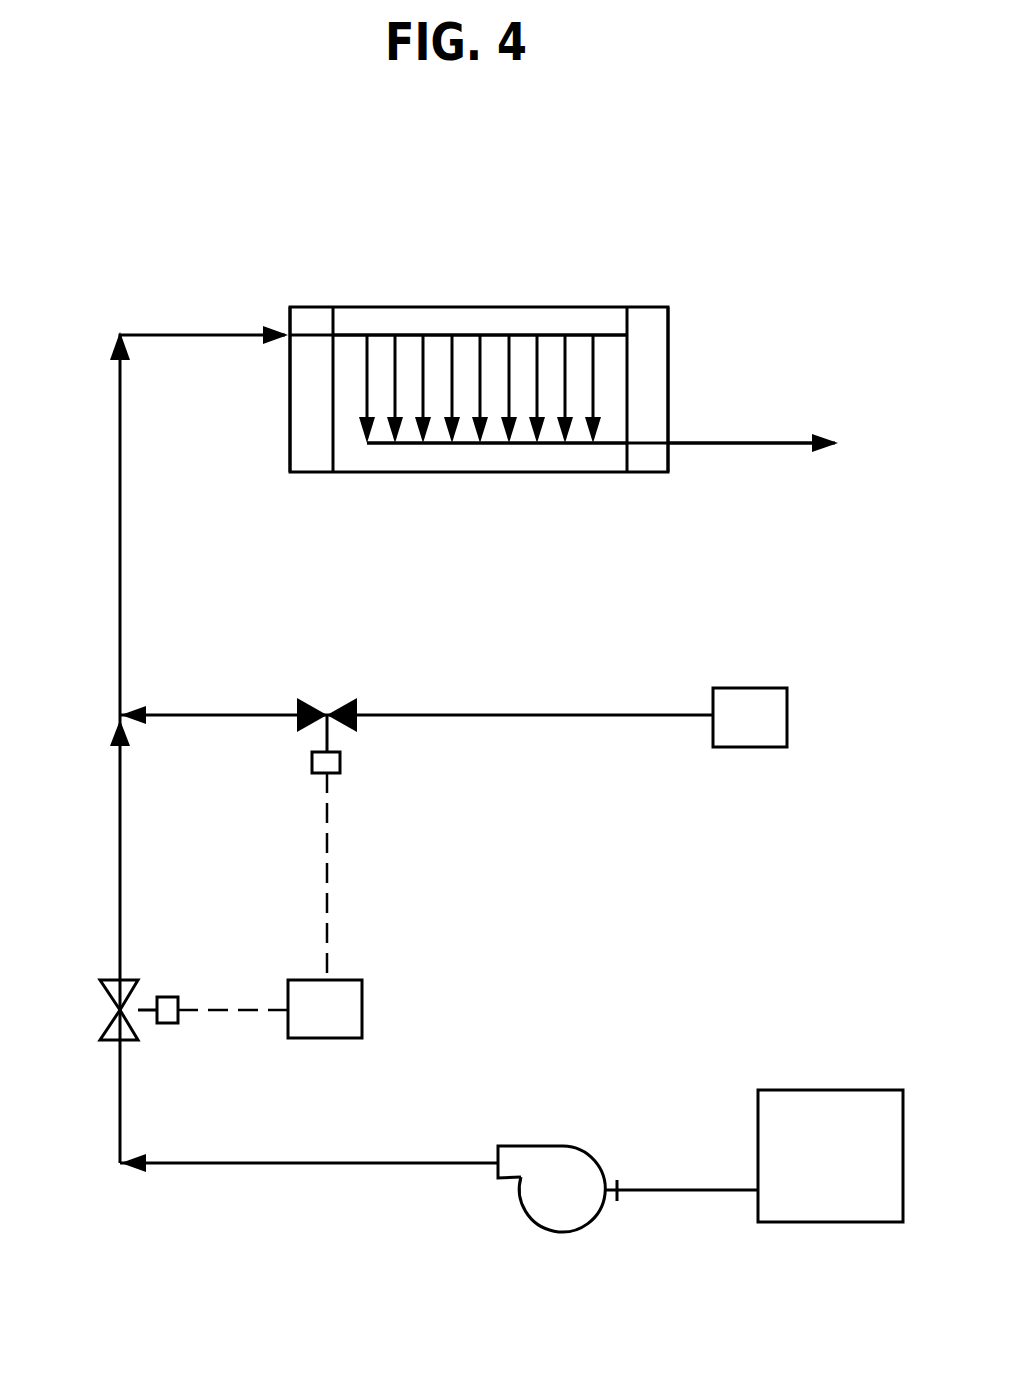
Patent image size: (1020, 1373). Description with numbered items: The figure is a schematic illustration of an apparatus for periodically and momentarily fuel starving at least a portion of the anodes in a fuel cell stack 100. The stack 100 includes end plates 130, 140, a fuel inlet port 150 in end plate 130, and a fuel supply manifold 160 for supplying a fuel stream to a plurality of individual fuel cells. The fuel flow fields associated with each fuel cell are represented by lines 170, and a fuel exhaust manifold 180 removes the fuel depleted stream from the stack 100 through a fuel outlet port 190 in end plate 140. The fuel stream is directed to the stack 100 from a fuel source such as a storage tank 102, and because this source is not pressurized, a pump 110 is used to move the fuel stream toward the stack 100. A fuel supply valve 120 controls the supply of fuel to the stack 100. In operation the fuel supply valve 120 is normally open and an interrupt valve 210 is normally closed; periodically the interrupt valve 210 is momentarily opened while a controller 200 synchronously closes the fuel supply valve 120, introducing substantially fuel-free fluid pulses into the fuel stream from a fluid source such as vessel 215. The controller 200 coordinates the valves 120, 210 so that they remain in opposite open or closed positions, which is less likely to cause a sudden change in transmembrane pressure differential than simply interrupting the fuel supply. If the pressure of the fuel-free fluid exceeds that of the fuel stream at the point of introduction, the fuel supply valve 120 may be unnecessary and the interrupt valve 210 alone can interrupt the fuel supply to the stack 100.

The fuel cell stack 100 is at (306, 181).
The storage tank 102 is at (783, 1105).
The pump 110 is at (557, 1145).
The fuel supply valve 120 is at (117, 1008).
The end plate 130 is at (316, 307).
The end plate 140 is at (647, 335).
The fuel inlet port 150 is at (297, 307).
The fuel supply manifold 160 is at (408, 335).
The fuel flow fields 170 is at (452, 384).
The fuel exhaust manifold 180 is at (490, 443).
The fuel outlet port 190 is at (645, 443).
The controller 200 is at (350, 1015).
The interrupt valve 210 is at (327, 713).
The vessel 215 is at (768, 698).